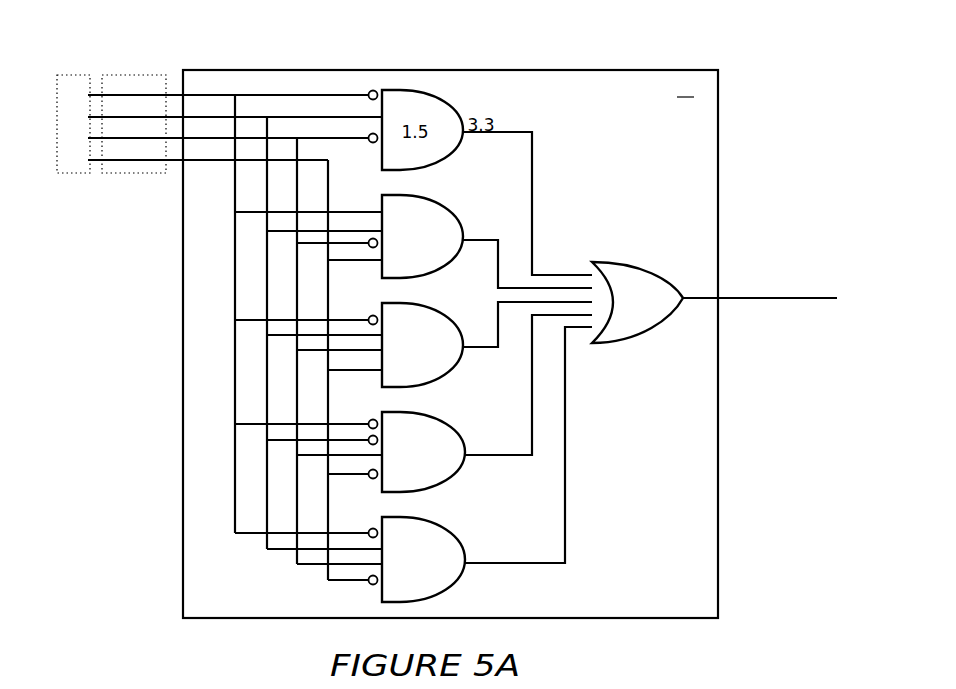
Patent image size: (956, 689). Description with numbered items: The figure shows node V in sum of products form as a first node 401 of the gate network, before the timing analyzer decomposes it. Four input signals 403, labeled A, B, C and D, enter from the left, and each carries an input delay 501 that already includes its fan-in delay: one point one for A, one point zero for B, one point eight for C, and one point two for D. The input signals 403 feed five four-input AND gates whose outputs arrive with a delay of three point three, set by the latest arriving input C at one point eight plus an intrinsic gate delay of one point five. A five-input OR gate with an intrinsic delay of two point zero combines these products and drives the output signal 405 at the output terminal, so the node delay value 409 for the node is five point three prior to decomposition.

The first node 401 is at (446, 70).
The input signals 403 is at (72, 75).
The output signal 405 is at (852, 284).
The node delay value 409 is at (700, 274).
The input delay 501 is at (133, 75).